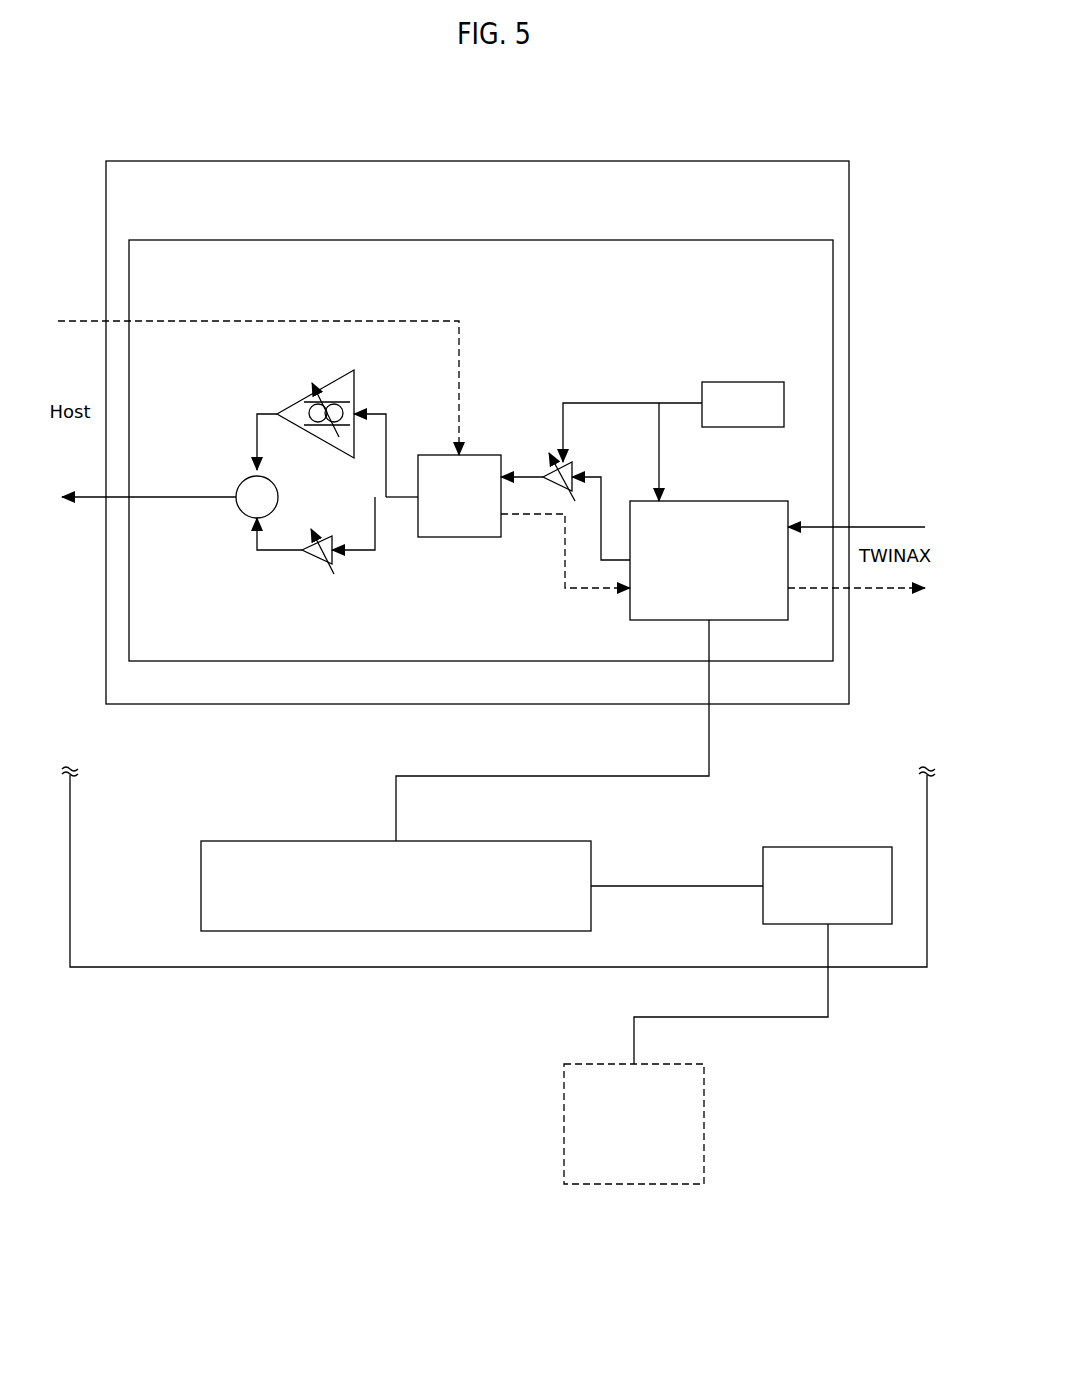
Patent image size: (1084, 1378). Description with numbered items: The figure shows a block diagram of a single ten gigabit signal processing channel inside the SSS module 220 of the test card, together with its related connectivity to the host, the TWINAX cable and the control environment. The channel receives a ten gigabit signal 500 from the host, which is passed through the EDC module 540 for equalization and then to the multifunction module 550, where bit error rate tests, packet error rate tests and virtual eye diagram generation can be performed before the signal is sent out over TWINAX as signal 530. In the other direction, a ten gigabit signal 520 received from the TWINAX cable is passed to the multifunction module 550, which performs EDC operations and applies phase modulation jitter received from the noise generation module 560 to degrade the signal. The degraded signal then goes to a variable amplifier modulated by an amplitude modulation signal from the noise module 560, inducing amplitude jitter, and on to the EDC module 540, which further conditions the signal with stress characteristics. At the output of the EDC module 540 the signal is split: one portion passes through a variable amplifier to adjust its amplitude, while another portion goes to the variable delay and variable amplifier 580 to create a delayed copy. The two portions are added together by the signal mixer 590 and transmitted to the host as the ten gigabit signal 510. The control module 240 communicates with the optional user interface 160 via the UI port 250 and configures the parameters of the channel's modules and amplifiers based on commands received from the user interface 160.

The SSS module 220 is at (712, 161).
The 10 G signal 500 is at (198, 321).
The 10 G signal 510 is at (200, 497).
The signal mixer 590 is at (240, 512).
The variable delay and variable amplifier 580 is at (354, 388).
The EDC module 540 is at (452, 537).
The noise generation module 560 is at (762, 382).
The multifunction module 550 is at (762, 501).
The 10 G signal 520 is at (886, 527).
The 10 G signal 530 is at (886, 588).
The control module 240 is at (310, 841).
The UI port 250 is at (860, 847).
The optional user interface 160 is at (564, 1083).